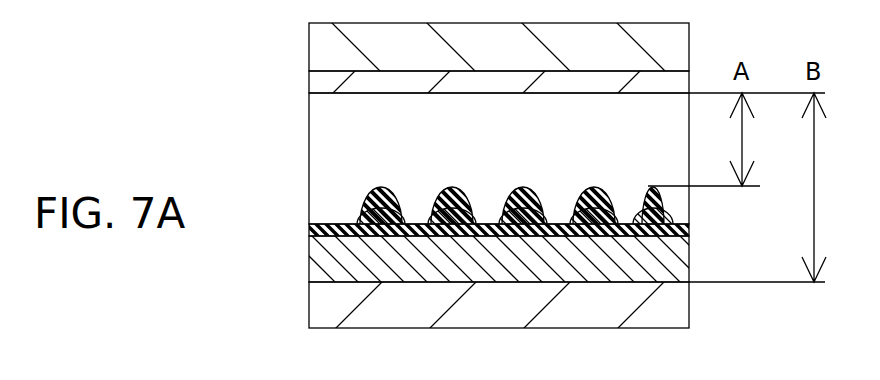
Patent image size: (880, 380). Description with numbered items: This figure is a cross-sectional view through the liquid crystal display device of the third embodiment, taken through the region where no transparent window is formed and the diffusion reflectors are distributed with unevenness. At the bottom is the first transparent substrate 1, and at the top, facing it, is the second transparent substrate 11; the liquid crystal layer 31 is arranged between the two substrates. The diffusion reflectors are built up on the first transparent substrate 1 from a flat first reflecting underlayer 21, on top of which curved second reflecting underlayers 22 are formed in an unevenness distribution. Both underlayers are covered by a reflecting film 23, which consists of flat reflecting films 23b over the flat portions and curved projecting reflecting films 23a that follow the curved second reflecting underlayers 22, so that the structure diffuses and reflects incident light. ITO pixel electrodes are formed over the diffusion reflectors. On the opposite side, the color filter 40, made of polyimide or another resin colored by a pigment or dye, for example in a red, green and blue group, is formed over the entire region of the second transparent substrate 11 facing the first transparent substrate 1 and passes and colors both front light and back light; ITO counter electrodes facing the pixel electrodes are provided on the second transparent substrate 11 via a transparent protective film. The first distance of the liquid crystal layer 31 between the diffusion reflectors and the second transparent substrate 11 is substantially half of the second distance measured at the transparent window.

The first transparent substrate 1 is at (316, 300).
The second transparent substrate 11 is at (316, 46).
The first reflecting underlayer 21 is at (316, 259).
The second reflecting underlayers 22 is at (320, 231).
The reflecting film 23 is at (447, 196).
The curved projecting reflecting films 23a is at (362, 204).
The flat reflecting films 23b is at (415, 224).
The liquid crystal layer 31 is at (316, 130).
The color filter 40 is at (316, 82).